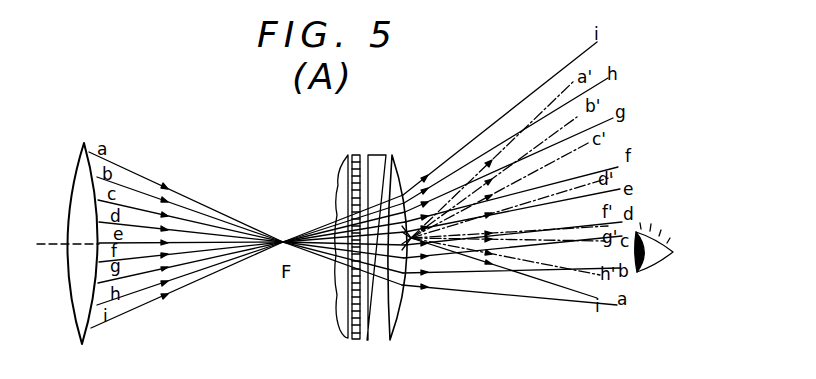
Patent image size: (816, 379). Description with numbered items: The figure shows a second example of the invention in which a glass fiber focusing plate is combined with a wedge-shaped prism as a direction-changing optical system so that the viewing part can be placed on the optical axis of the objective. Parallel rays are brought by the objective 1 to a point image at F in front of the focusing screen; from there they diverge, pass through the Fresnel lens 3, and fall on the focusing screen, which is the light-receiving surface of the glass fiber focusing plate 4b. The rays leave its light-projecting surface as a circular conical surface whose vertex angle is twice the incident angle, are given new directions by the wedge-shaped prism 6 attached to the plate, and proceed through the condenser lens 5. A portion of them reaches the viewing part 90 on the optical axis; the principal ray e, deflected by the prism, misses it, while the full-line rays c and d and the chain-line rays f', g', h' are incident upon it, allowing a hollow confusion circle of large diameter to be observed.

The objective 1 is at (82, 176).
The Fresnel lens 3 is at (342, 158).
The glass fiber focusing plate 4b is at (356, 155).
The condenser lens 5 is at (395, 178).
The wedge-shaped prism 6 is at (378, 155).
The viewing part 90 is at (677, 239).